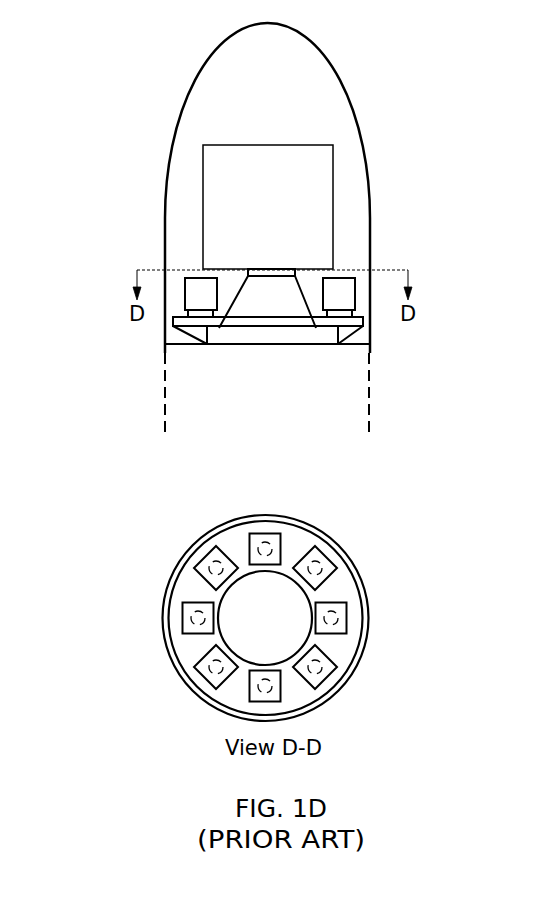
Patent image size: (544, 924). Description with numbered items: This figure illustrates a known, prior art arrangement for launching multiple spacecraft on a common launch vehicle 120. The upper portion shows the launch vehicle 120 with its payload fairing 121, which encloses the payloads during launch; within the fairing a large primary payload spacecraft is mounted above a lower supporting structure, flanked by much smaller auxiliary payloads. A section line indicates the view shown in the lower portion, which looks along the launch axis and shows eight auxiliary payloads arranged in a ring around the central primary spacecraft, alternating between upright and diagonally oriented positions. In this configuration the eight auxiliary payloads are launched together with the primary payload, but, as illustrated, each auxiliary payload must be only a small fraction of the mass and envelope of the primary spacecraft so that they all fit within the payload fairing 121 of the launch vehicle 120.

The launch vehicle 120 is at (146, 37).
The payload fairing 121 is at (333, 68).